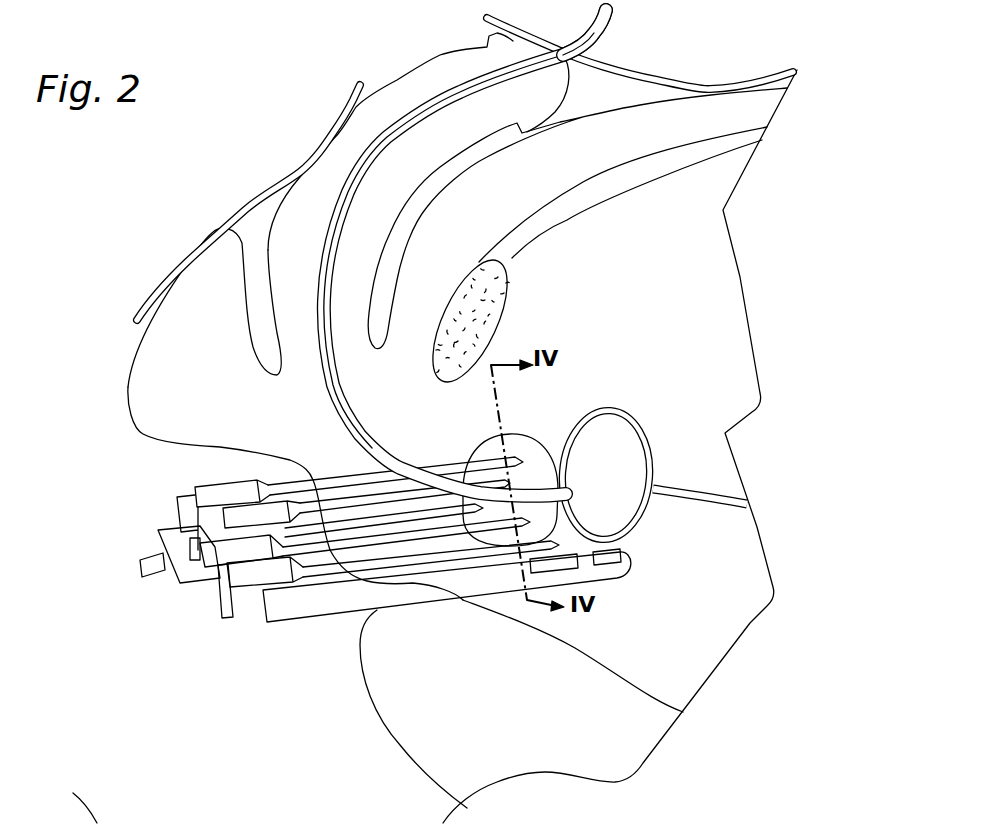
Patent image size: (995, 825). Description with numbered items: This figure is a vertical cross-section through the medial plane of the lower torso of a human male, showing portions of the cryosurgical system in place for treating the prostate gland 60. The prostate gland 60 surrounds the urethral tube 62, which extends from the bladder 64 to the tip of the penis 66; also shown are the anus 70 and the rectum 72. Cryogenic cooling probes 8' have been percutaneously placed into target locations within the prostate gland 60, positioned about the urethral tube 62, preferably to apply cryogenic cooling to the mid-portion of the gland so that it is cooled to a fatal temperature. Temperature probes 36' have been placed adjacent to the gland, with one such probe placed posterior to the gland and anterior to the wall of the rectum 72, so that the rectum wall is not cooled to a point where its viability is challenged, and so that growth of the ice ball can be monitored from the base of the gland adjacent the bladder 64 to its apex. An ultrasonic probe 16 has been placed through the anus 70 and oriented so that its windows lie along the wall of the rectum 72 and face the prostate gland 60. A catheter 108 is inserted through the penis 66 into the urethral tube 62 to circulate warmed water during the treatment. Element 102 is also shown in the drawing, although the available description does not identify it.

The cryogenic cooling probe 8' is at (353, 522).
The ultrasonic probe 16 is at (279, 622).
The temperature probe 36' is at (163, 539).
The prostate gland 60 is at (532, 448).
The urethral tube 62 is at (355, 400).
The bladder 64 is at (623, 430).
The penis 66 is at (431, 73).
The anus 70 is at (353, 617).
The rectum 72 is at (723, 628).
The retaining strip 102 is at (217, 601).
The catheter 108 is at (613, 25).